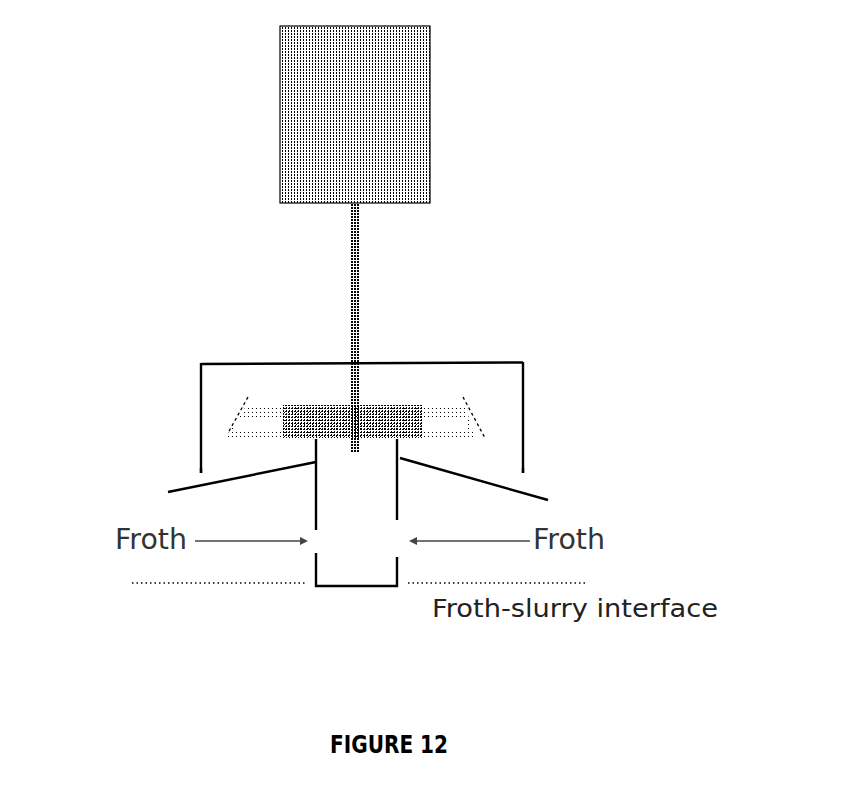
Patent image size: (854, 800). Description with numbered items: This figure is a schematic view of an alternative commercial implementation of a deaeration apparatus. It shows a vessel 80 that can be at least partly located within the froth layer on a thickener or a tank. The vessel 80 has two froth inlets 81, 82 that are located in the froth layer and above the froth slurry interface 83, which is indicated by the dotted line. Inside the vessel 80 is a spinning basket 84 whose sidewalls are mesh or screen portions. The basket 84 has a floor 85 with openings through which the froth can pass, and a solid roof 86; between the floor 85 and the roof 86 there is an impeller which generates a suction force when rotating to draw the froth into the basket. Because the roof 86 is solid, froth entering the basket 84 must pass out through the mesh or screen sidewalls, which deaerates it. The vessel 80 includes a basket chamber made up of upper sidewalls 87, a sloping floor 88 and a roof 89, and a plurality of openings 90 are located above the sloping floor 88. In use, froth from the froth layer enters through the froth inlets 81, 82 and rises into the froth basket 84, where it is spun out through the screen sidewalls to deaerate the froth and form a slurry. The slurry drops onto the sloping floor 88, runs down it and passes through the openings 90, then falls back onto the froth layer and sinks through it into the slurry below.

The vessel 80 is at (398, 343).
The froth inlet 81 is at (313, 550).
The froth inlet 82 is at (410, 555).
The froth slurry interface 83 is at (138, 592).
The spinning basket 84 is at (422, 397).
The floor 85 is at (258, 436).
The solid roof 86 is at (290, 405).
The upper sidewalls 87 is at (195, 438).
The sloping floor 88 is at (168, 492).
The roof 89 is at (315, 360).
The openings 90 is at (197, 475).